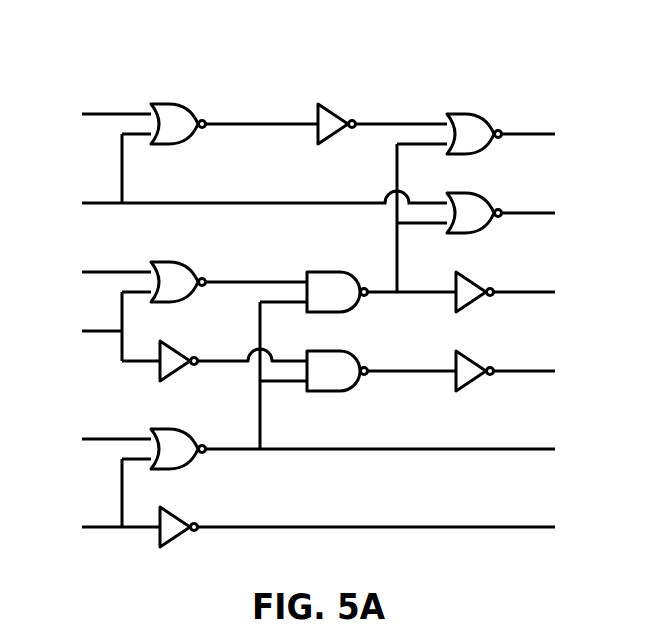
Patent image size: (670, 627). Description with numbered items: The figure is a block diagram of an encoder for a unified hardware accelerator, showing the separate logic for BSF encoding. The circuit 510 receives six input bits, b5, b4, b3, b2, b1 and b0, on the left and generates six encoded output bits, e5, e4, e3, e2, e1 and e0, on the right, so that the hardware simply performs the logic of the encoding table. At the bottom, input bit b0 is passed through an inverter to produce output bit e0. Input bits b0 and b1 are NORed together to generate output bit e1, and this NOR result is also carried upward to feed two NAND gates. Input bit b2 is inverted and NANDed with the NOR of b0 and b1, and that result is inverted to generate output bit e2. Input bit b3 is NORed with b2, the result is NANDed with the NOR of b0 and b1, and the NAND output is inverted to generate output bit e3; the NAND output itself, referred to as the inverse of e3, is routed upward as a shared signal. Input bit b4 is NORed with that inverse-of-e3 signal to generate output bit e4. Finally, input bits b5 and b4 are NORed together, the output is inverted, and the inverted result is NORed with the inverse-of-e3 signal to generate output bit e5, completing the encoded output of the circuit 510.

The circuit 510 is at (60, 25).
The input bit b[5] b5 is at (100, 114).
The input bit b[4] b4 is at (248, 202).
The input bit b[3] b3 is at (100, 272).
The input bit b[2] b2 is at (86, 331).
The input bit b[1] b1 is at (100, 439).
The input bit b[0] b0 is at (105, 527).
The encoded output bit e[5] e5 is at (544, 134).
The encoded output bit e[4] e4 is at (544, 213).
The encoded output bit e[3] e3 is at (540, 292).
The encoded output bit e[2] e2 is at (540, 371).
The encoded output bit e[1] e1 is at (396, 449).
The encoded output bit e[0] e0 is at (392, 527).